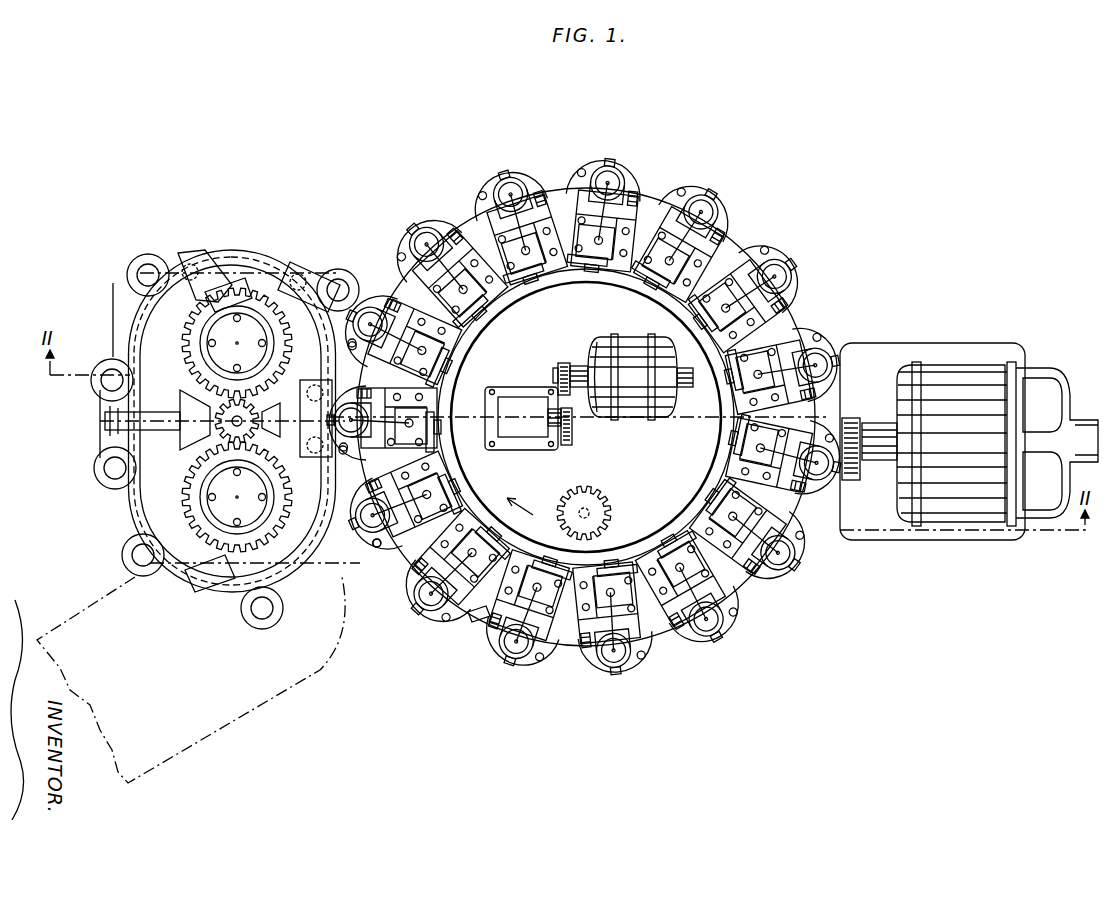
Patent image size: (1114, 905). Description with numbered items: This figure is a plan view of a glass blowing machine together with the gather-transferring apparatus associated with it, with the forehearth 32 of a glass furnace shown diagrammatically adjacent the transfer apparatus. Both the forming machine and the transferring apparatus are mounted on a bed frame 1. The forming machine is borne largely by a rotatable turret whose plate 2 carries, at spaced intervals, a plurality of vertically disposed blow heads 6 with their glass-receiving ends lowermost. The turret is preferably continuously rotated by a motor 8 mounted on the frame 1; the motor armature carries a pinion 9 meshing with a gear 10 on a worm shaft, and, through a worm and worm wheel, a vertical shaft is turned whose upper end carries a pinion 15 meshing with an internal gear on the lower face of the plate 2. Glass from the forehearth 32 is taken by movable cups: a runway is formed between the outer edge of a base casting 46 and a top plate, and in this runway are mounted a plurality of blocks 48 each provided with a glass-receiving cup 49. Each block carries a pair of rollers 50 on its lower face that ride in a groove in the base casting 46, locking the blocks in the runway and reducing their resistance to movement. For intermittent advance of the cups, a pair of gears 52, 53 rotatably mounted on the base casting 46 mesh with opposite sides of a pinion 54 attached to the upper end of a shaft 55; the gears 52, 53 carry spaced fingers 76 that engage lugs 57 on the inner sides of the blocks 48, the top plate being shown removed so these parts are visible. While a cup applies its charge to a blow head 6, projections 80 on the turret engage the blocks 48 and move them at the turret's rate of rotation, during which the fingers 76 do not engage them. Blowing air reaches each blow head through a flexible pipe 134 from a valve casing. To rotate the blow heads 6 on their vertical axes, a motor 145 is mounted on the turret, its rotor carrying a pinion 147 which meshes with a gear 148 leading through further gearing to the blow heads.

The bed frame 1 is at (968, 540).
The plate 2 is at (657, 642).
The blow heads 6 is at (503, 643).
The motor 8 is at (963, 373).
The pinion 9 is at (850, 417).
The gear 10 is at (850, 482).
The pinion 15 is at (600, 507).
The forehearth 32 is at (262, 710).
The base casting 46 is at (265, 252).
The blocks 48 is at (133, 537).
The glass-receiving cup 49 is at (133, 553).
The rollers 50 is at (298, 267).
The gear 52 is at (193, 480).
The gear 53 is at (180, 337).
The pinion 54 is at (120, 421).
The shaft 55 is at (120, 432).
The lugs 57 is at (203, 283).
The fingers 76 is at (225, 285).
The projections 80 is at (352, 347).
The flexible pipe 134 is at (478, 618).
The motor 145 is at (633, 347).
The pinion 147 is at (560, 362).
The gear 148 is at (558, 448).